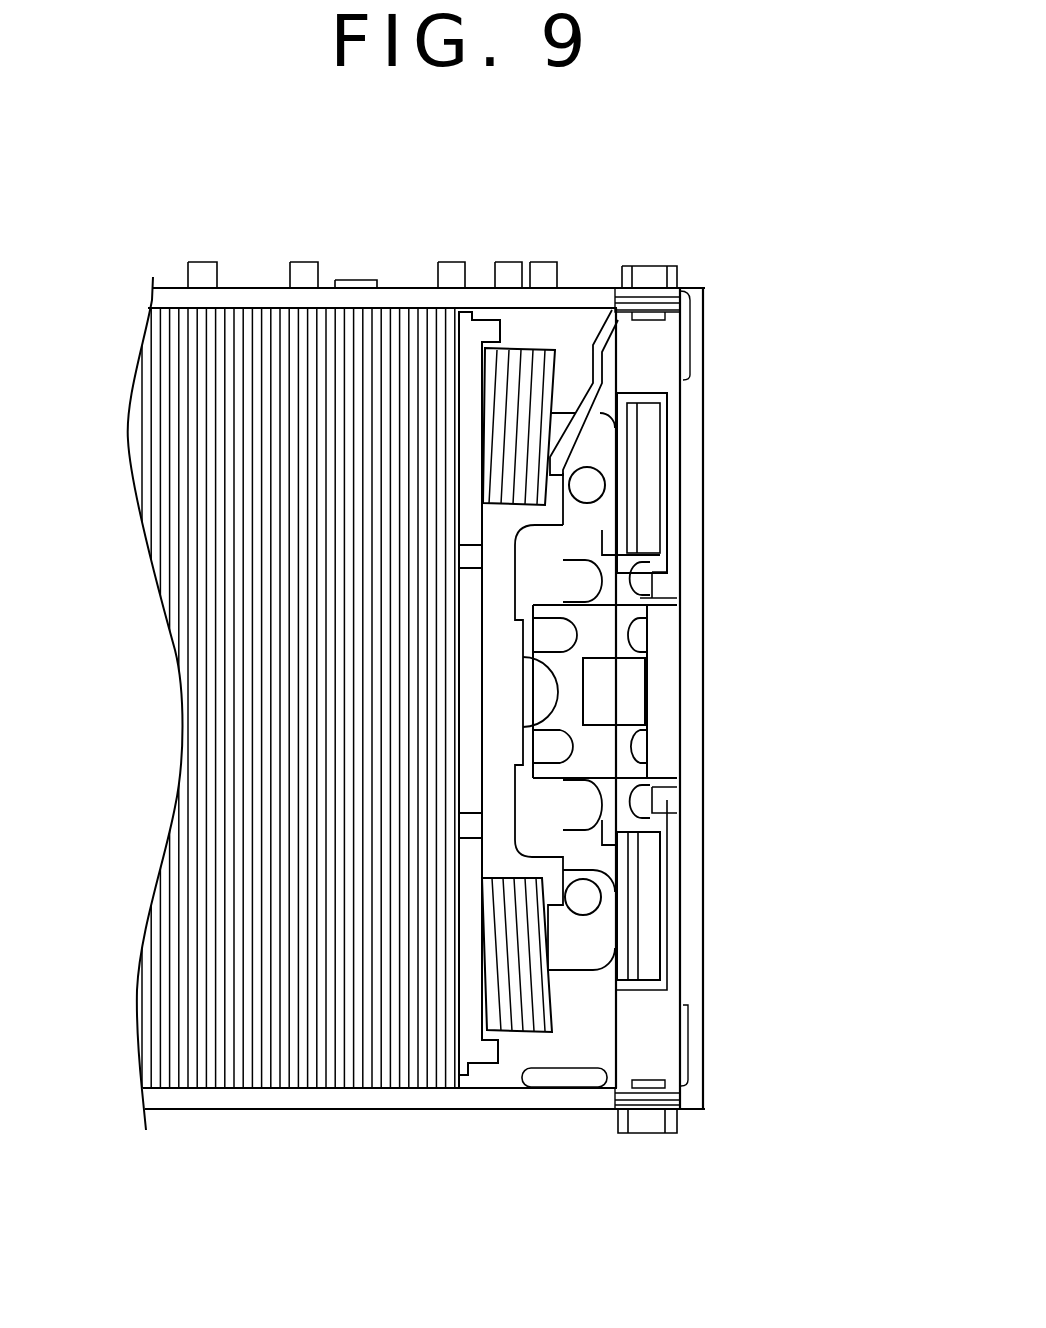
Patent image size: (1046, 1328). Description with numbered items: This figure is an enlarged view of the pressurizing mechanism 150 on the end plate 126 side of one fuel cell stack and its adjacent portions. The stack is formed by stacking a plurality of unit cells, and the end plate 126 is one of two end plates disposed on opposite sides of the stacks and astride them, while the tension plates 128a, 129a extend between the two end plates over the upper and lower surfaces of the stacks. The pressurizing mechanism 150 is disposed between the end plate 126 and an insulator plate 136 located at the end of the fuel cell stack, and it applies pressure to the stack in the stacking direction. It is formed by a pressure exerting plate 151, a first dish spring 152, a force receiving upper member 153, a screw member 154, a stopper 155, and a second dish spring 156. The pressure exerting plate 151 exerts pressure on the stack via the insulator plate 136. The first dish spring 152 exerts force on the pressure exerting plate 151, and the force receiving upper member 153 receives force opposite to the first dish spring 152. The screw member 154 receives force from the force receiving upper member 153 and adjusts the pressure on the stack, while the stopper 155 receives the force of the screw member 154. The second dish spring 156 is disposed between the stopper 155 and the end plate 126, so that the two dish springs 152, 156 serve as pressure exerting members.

The pressurizing mechanism 150 is at (585, 252).
The tension plate 128a is at (177, 290).
The tension plate 129a is at (220, 1110).
The end plate 126 is at (672, 343).
The insulator plate 136 is at (452, 1080).
The first dish spring 152 is at (487, 415).
The force receiving upper member 153 is at (593, 870).
The screw member 154 is at (640, 658).
The stopper 155 is at (660, 565).
The second dish spring 156 is at (658, 895).
The pressure exerting plate 151 is at (483, 1065).